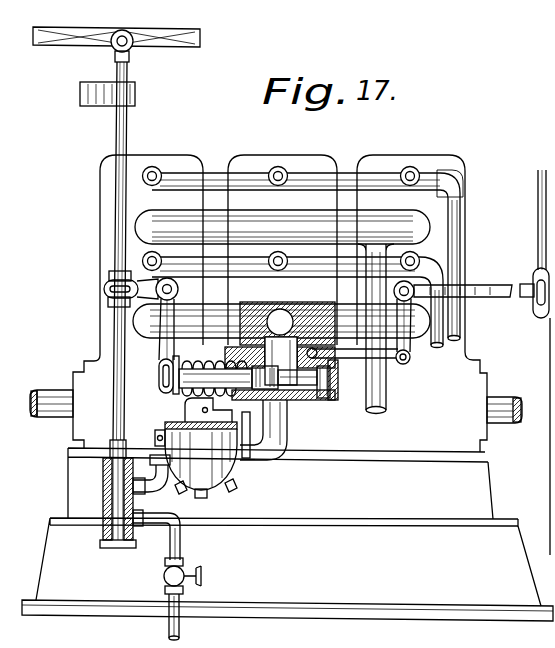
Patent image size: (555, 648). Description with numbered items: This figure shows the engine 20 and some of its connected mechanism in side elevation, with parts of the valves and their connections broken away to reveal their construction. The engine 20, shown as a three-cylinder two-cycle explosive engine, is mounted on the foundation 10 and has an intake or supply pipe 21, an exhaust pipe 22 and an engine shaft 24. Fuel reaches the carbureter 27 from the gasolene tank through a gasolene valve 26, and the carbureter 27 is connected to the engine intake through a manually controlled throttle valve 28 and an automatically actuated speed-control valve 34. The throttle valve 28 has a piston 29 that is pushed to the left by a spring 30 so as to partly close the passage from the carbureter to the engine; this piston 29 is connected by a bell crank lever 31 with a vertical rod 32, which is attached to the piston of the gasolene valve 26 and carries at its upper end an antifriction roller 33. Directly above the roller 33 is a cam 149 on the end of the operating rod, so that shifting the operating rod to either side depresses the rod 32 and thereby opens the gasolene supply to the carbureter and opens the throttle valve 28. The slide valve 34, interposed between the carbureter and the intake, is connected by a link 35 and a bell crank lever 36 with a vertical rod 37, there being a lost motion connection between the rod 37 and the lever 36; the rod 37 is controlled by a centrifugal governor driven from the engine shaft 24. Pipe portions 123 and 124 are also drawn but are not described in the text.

The foundation 10 is at (487, 540).
The engine 20 is at (491, 348).
The intake pipe 21 is at (297, 293).
The exhaust pipe 22 is at (366, 226).
The shaft 24 is at (500, 407).
The gasolene valve 26 is at (97, 493).
The carbureter 27 is at (238, 468).
The throttle valve 28 is at (303, 402).
The piston 29 is at (322, 383).
The spring 30 is at (208, 366).
The bell crank lever 31 is at (160, 352).
The vertical rod 32 is at (113, 325).
The antifriction roller 33 is at (134, 52).
The speed-control valve 34 is at (333, 400).
The link 35 is at (391, 364).
The bell crank lever 36 is at (481, 284).
The vertical rod 37 is at (540, 233).
The pipe 123 is at (271, 268).
The pipe 124 is at (223, 175).
The cam 149 is at (97, 39).